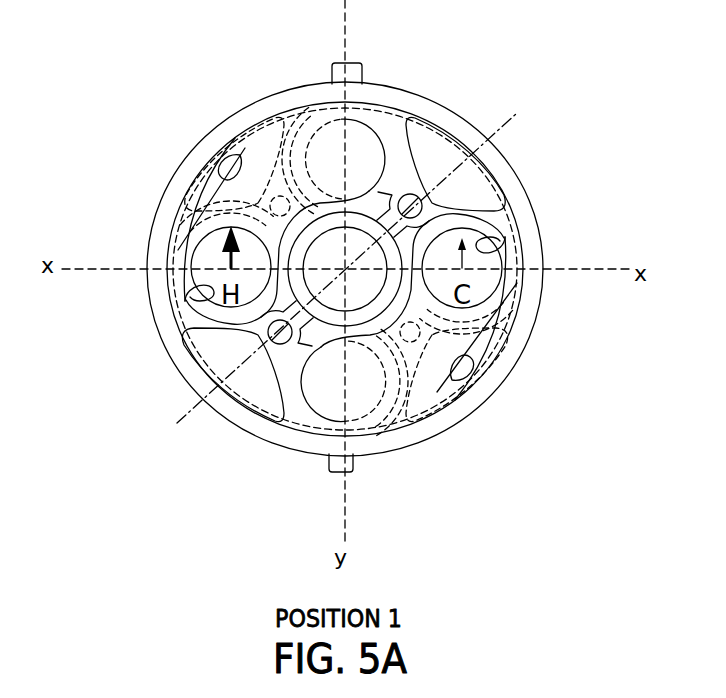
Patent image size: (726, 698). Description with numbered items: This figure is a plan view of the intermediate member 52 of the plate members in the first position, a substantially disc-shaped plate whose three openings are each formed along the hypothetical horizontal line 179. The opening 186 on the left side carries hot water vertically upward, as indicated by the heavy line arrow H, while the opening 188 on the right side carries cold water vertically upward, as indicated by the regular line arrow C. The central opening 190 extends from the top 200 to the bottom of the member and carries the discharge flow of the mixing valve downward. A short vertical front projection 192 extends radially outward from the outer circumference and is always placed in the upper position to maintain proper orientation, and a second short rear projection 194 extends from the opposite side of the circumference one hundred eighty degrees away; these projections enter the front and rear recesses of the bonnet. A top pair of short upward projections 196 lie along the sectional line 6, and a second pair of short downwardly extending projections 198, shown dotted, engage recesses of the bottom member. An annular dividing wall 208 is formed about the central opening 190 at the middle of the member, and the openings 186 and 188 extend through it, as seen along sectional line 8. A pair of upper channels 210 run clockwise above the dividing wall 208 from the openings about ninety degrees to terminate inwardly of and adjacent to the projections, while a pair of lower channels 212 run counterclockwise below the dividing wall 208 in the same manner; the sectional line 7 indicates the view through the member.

The intermediate member 52 is at (152, 195).
The hypothetical horizontal line 179 is at (622, 270).
The opening 186 is at (186, 287).
The opening 188 is at (482, 264).
The central opening 190 is at (310, 255).
The front projection 192 is at (356, 469).
The rear projection 194 is at (363, 74).
The upward projections 196 is at (423, 206).
The downward projections 198 is at (237, 147).
The top 200 is at (380, 97).
The annular dividing wall 208 is at (270, 150).
The upper channels 210 is at (238, 155).
The lower channels 212 is at (490, 210).
The sectional line 6— 6 is at (177, 423).
The sectional line 7— 7 is at (345, 47).
The sectional line 8— 8 is at (107, 269).